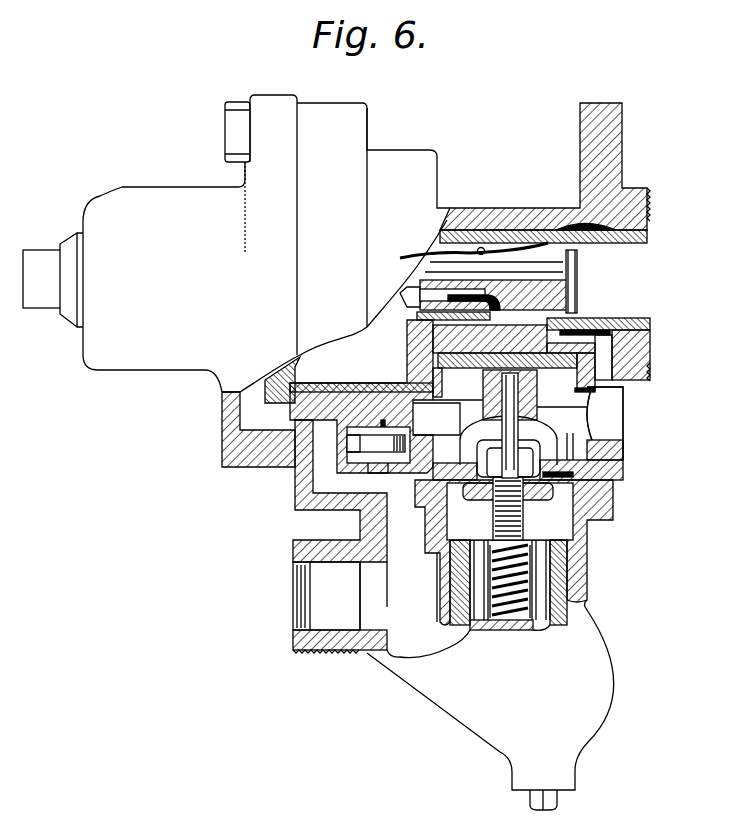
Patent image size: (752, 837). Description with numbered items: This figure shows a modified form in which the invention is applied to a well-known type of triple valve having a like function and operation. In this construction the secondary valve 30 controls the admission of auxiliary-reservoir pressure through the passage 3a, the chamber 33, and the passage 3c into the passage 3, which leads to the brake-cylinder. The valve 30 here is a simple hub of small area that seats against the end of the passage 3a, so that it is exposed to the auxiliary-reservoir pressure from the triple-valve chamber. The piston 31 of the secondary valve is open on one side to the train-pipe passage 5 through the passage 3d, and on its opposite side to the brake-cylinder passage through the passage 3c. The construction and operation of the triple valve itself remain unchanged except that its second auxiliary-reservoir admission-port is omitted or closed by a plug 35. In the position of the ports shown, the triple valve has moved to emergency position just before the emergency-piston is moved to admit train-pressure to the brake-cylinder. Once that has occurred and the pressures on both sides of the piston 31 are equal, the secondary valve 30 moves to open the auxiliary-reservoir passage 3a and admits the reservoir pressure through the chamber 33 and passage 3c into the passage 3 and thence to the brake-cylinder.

The passage 3 is at (595, 423).
The passage 3a is at (383, 420).
The passage 3c is at (418, 427).
The passage 3d is at (372, 468).
The train-pipe passage 5 is at (326, 596).
The secondary valve 30 is at (348, 429).
The piston 31 is at (376, 444).
The chamber 33 is at (358, 436).
The plug 35 is at (570, 308).